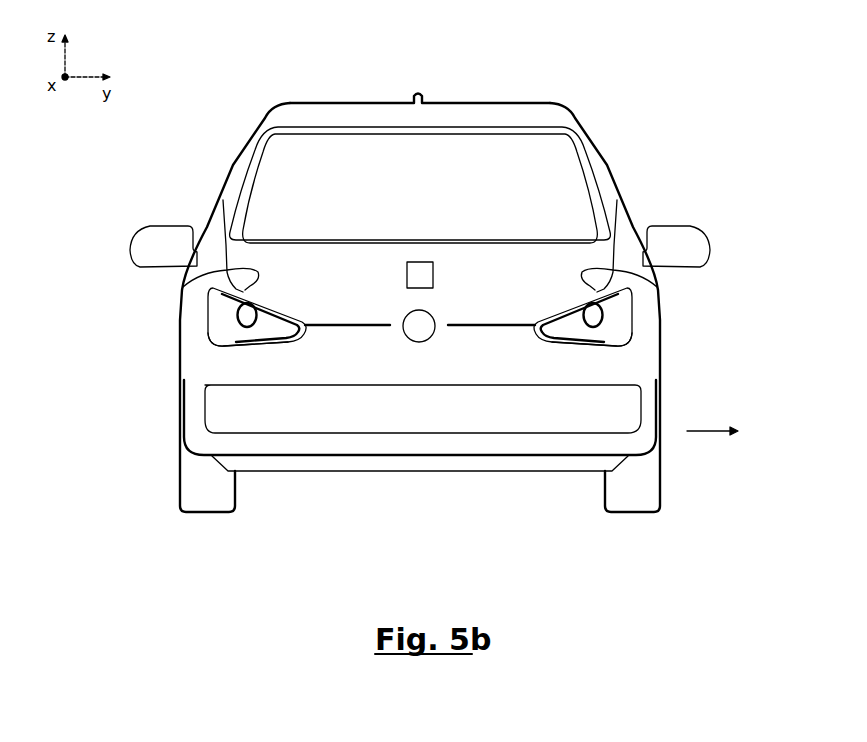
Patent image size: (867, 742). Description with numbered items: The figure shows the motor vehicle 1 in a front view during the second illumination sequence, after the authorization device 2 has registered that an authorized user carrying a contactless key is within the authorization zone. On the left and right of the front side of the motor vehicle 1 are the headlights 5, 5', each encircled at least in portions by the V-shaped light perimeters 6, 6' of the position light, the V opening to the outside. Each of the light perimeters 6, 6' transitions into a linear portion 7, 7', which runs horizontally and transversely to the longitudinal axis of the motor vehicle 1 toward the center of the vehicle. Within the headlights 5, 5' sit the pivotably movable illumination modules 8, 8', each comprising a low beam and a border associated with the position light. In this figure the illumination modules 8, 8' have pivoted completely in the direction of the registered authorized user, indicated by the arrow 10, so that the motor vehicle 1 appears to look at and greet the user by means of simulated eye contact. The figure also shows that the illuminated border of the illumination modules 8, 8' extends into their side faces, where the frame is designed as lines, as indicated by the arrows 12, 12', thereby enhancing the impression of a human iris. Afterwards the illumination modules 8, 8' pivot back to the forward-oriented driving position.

The motor vehicle 1 is at (557, 117).
The authorization device 2 is at (420, 270).
The headlight 5 is at (214, 317).
The headlight 5' is at (620, 317).
The light perimeter 6 is at (180, 283).
The light perimeter 6' is at (658, 284).
The linear portion 7 is at (347, 426).
The linear portion 7' is at (491, 425).
The illumination module 8 is at (202, 364).
The illumination module 8' is at (642, 360).
The arrow 10 is at (712, 441).
The arrow 12 is at (167, 332).
The arrow 12' is at (574, 412).